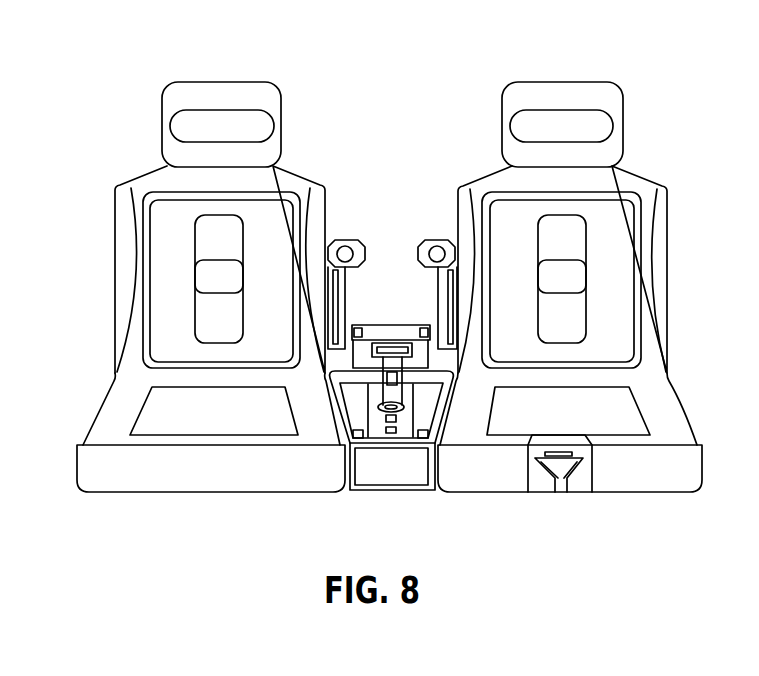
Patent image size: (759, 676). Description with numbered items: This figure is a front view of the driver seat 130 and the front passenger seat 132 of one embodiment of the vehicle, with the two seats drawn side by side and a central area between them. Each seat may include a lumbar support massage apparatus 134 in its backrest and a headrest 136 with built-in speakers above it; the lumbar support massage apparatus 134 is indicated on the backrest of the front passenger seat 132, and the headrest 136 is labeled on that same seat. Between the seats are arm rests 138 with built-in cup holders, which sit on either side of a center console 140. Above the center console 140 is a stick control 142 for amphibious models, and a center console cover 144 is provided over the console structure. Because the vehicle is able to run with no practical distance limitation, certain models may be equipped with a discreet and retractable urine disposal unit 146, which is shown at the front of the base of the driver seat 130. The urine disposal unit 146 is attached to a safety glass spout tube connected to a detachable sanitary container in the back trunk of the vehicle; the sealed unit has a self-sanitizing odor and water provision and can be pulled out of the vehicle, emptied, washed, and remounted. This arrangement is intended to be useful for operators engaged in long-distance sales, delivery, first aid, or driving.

The driver seat 130 is at (570, 316).
The front passenger seat 132 is at (211, 284).
The lumbar support massage apparatus 134 is at (236, 222).
The headrest 136 is at (228, 82).
The arm rests 138 is at (438, 238).
The center console 140 is at (388, 470).
The stick control 142 is at (401, 352).
The center console cover 144 is at (391, 350).
The urine disposal unit 146 is at (541, 481).